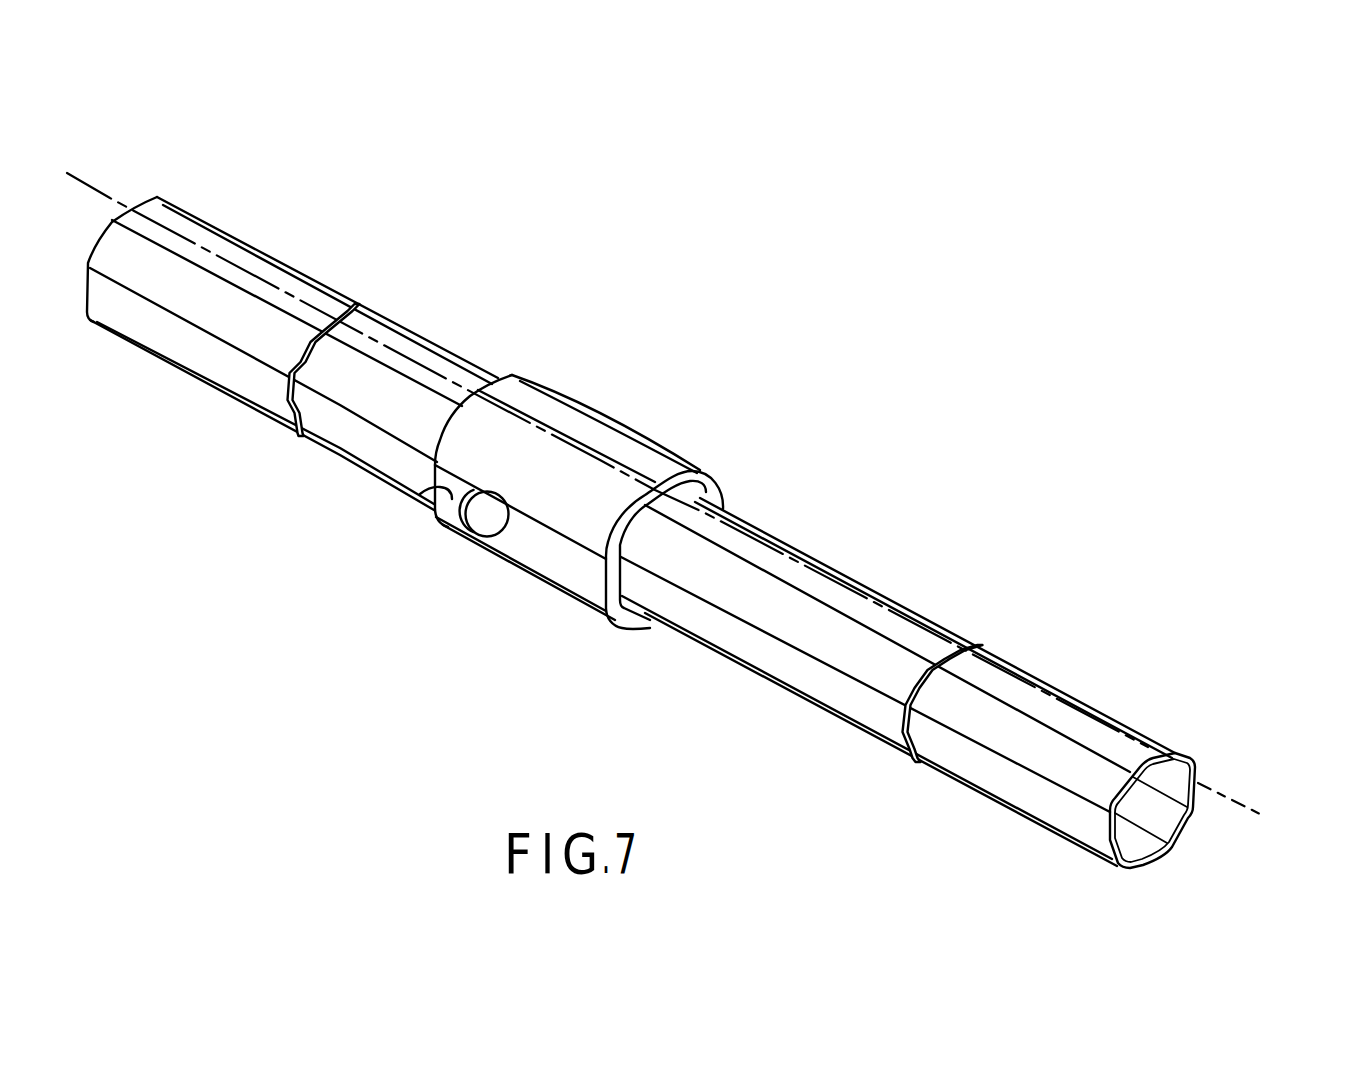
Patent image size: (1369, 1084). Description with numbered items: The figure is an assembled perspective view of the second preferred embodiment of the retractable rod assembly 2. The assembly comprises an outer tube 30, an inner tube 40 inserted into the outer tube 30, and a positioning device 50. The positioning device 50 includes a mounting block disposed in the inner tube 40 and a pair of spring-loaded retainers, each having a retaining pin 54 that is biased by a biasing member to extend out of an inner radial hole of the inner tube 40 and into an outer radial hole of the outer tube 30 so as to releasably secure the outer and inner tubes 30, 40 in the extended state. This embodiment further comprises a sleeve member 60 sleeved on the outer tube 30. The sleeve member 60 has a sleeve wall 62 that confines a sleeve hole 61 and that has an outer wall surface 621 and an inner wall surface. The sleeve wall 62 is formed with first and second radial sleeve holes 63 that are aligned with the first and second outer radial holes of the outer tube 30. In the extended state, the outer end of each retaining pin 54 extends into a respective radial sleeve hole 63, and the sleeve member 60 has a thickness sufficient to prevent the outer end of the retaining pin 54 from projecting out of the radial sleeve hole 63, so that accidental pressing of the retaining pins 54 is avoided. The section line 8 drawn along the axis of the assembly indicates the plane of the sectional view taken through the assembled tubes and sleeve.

The retractable rod assembly 2 is at (641, 532).
The section line 8- 8 is at (67, 173).
The outer tube 30 is at (419, 322).
The inner tube 40 is at (871, 561).
The positioning device 50 is at (529, 489).
The retaining pin 54 is at (498, 527).
The sleeve member 60 is at (505, 430).
The sleeve hole 61 is at (618, 578).
The sleeve wall 62 is at (633, 551).
The outer wall surface 621 is at (622, 428).
The radial sleeve hole 63 is at (420, 494).